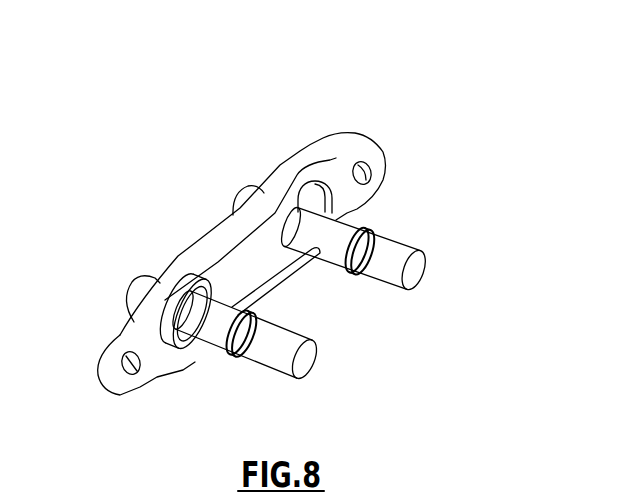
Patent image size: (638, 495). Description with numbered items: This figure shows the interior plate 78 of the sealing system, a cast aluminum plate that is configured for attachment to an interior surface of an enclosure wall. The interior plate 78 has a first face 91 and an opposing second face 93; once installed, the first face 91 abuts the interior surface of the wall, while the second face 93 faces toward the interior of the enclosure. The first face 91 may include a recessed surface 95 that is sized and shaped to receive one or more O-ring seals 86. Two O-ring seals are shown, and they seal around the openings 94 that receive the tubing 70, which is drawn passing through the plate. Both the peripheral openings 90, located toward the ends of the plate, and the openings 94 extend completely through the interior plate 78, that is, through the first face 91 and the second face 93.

The interior plate 78 is at (267, 260).
The tubing 70 is at (413, 280).
The O-ring seals 86 is at (178, 340).
The peripheral openings 90 is at (373, 177).
The first face 91 is at (337, 178).
The second face 93 is at (197, 241).
The openings 94 is at (297, 207).
The recessed surface 95 is at (278, 258).